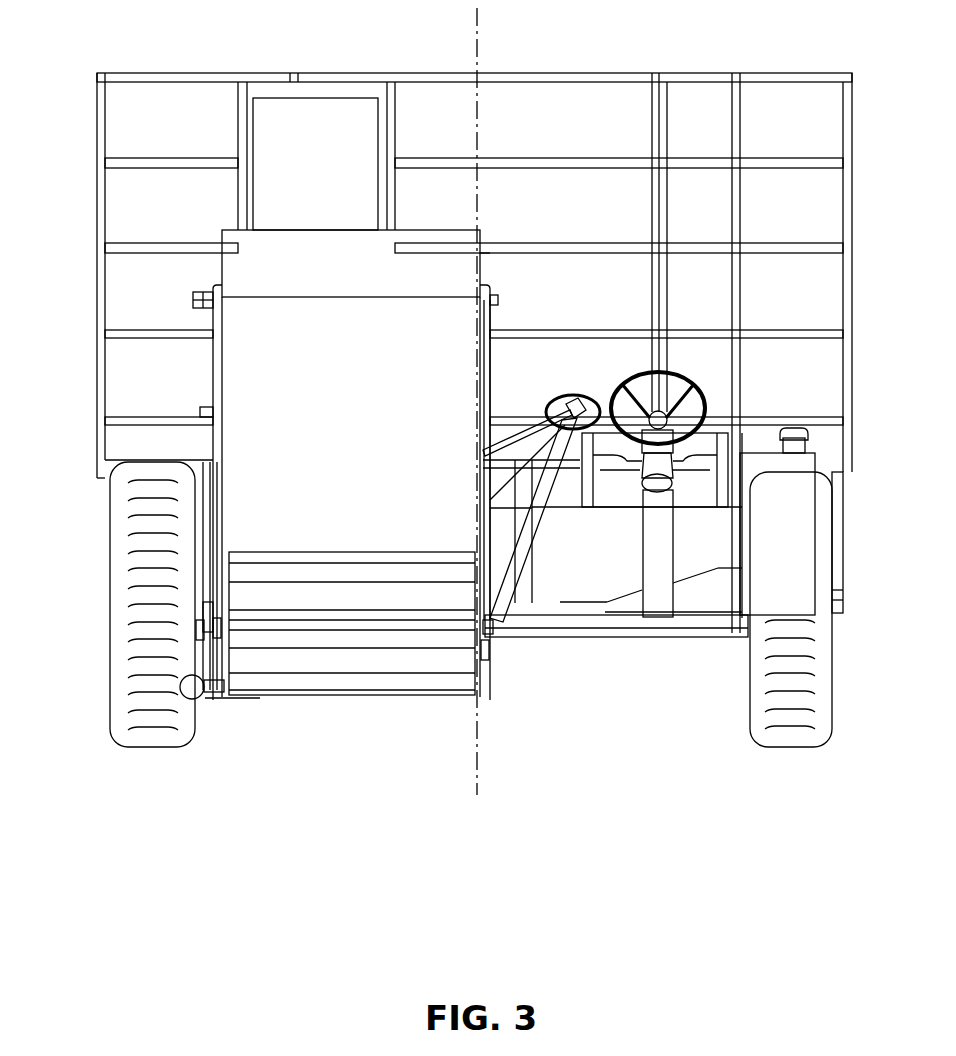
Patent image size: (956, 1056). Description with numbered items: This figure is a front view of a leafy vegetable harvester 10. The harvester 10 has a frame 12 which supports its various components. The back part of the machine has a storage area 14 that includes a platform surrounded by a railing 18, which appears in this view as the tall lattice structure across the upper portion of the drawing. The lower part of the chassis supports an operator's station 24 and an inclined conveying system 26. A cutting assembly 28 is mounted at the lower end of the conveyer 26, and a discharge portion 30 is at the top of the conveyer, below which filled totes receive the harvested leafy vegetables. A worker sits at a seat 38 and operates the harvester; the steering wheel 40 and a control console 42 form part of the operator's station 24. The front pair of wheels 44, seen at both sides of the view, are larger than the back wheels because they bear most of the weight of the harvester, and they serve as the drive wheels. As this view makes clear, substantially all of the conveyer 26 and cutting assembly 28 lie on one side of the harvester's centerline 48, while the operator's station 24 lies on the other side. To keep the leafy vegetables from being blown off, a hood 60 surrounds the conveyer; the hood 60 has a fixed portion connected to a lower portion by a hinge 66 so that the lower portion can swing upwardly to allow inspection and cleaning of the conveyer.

The leafy vegetable harvester 10 is at (916, 211).
The frame 12 is at (605, 637).
The storage area 14 is at (80, 282).
The railing 18 is at (97, 115).
The operator's station 24 is at (626, 382).
The inclined conveying system 26 is at (190, 376).
The cutting assembly 28 is at (418, 701).
The discharge portion 30 is at (483, 265).
The seat 38 is at (623, 508).
The steering wheel 40 is at (669, 374).
The control console 42 is at (666, 443).
The front wheels 44 is at (110, 685).
The centerline 48 is at (476, 30).
The hood 60 is at (450, 407).
The hinge 66 is at (306, 294).